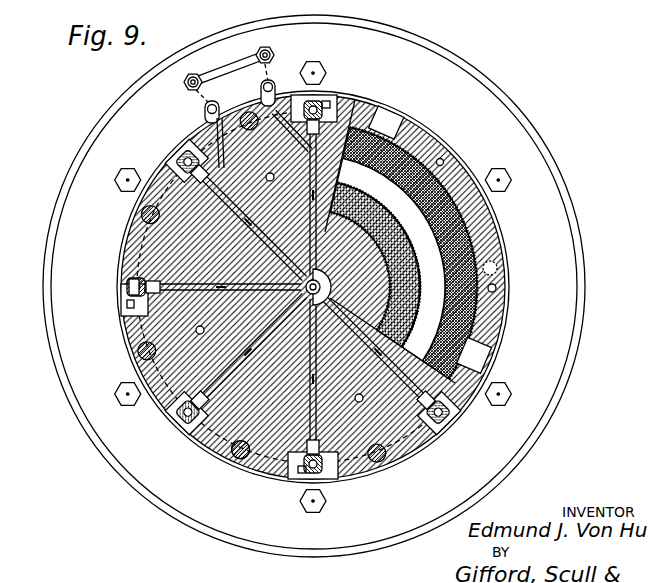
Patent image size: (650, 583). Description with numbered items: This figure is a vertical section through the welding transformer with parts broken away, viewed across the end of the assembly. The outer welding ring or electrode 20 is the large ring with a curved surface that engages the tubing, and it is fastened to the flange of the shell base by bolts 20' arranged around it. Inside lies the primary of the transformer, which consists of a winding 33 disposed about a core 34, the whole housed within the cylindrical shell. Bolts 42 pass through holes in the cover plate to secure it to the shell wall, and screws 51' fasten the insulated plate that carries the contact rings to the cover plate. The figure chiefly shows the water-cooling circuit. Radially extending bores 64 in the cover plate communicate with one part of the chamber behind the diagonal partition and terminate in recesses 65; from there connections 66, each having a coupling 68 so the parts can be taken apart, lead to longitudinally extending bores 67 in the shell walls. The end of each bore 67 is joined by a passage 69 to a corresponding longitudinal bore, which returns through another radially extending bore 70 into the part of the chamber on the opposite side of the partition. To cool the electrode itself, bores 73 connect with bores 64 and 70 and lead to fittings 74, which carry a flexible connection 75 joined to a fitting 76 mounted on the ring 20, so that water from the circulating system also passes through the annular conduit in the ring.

The welding rings or electrodes 20 is at (314, 286).
The bolts 20' is at (324, 287).
The winding 33 is at (375, 255).
The core 34 is at (435, 327).
The bolts 42 is at (243, 455).
The screws 51' is at (223, 347).
The radially extending bores 64 is at (367, 108).
The recesses 65 is at (175, 162).
The connections 66 is at (124, 291).
The longitudinally extending bores 67 is at (333, 100).
The coupling 68 is at (130, 283).
The passage 69 is at (500, 240).
The radially extending bore 70 is at (197, 196).
The bores 73 is at (222, 120).
The fittings 74 is at (272, 84).
The flexible connection 75 is at (282, 72).
The fitting 76 is at (256, 55).